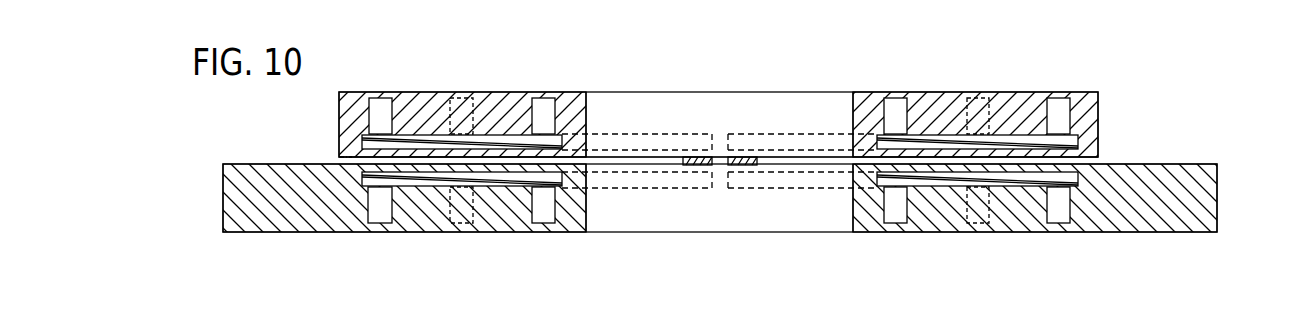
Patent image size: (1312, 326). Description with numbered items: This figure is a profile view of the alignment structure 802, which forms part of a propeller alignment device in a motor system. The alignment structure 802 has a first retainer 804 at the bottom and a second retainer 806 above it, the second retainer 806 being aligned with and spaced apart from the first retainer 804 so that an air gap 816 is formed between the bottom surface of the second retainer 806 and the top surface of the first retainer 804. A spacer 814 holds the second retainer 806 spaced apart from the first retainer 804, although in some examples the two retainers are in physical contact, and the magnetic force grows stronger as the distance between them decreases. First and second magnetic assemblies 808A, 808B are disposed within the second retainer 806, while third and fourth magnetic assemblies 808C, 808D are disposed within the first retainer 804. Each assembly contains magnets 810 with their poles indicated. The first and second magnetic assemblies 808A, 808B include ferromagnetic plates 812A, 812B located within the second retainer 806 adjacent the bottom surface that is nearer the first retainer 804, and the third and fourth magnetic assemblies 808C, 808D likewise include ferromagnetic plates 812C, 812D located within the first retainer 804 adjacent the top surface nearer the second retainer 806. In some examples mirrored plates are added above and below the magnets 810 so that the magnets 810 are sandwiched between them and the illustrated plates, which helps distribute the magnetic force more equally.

The alignment structure 802 is at (1097, 45).
The first retainer 804 is at (1208, 198).
The second retainer 806 is at (1098, 110).
The first magnetic assembly 808A is at (527, 55).
The second magnetic assembly 808B is at (912, 55).
The third magnetic assembly 808C is at (527, 265).
The fourth magnetic assembly 808D is at (912, 265).
The magnets 810 is at (538, 104).
The ferromagnetic plate 812A is at (360, 138).
The ferromagnetic plate 812B is at (1078, 142).
The ferromagnetic plate 812C is at (363, 180).
The ferromagnetic plate 812D is at (1078, 178).
The spacer 814 is at (742, 165).
The air gap 816 is at (340, 157).